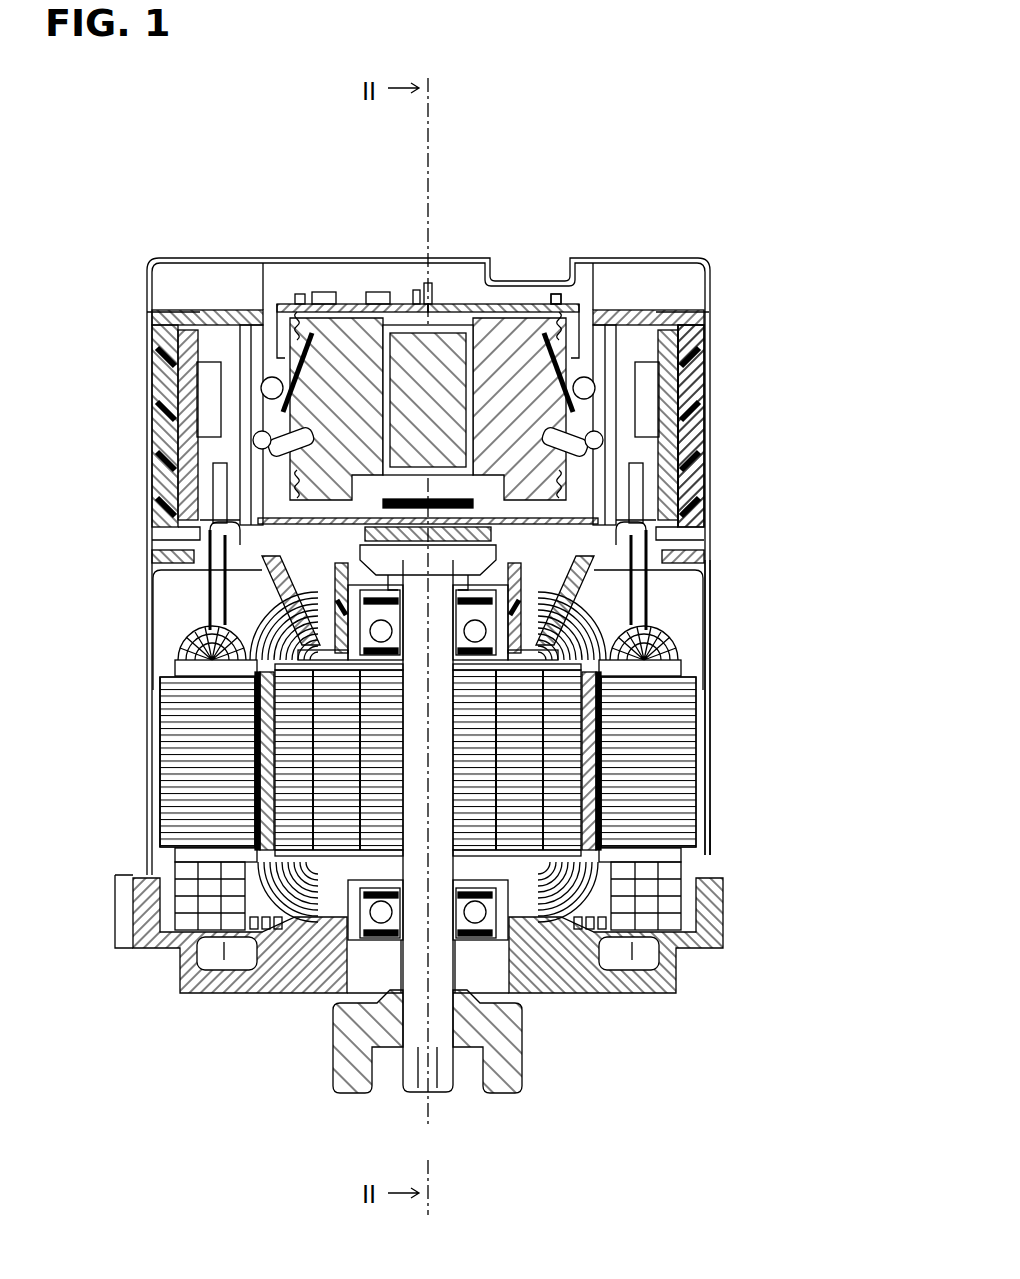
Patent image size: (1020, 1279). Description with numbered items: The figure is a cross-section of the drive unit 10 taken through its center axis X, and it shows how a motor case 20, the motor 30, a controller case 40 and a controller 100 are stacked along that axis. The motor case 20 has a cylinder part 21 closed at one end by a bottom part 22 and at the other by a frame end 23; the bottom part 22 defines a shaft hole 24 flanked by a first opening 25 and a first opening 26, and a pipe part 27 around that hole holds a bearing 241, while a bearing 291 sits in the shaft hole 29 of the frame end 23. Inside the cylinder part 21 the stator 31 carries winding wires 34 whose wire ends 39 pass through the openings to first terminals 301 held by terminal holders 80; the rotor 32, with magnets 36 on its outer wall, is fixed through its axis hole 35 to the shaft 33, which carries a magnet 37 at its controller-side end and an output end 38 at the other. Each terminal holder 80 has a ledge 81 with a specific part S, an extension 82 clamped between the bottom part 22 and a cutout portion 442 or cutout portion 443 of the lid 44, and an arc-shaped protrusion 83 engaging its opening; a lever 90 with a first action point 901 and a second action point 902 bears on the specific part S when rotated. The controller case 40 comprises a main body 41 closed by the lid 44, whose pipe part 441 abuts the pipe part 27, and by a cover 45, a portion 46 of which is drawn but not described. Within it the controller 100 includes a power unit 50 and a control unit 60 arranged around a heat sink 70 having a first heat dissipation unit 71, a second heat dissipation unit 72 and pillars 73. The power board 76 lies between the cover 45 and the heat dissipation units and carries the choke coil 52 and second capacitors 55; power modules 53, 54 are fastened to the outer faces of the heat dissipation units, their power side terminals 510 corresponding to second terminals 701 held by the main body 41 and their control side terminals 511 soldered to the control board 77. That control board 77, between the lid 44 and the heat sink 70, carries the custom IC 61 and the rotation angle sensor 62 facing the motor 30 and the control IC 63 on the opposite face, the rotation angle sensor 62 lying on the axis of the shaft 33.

The drive unit 10 is at (766, 213).
The controller 100 is at (422, 276).
The motor case 20 is at (712, 793).
The cylinder part 21 is at (712, 818).
The bottom part 22 is at (575, 555).
The frame end 23 is at (593, 997).
The shaft hole 24 is at (448, 590).
The first opening 25 is at (152, 580).
The first opening 26 is at (708, 590).
The pipe part 27 is at (515, 605).
The shaft hole 29 is at (462, 925).
The bearing 291 is at (500, 925).
The motor 30 is at (142, 705).
The stator 31 is at (162, 728).
The rotor 32 is at (162, 748).
The shaft 33 is at (420, 955).
The winding wires 34 is at (170, 650).
The axis hole 35 is at (162, 800).
The magnets 36 is at (162, 775).
The magnet 37 is at (420, 635).
The output end 38 is at (333, 1070).
The wire ends 39 is at (150, 463).
The controller case 40 is at (708, 358).
The main body 41 is at (708, 384).
The lid 44 is at (705, 650).
The pipe part 441 is at (322, 612).
The cutout portion 442 is at (152, 560).
The cutout portion 443 is at (708, 565).
The cover 45 is at (697, 257).
The cover lip 46 is at (150, 330).
The power unit 50 is at (355, 276).
The choke coil 52 is at (390, 307).
The power module 53 is at (150, 405).
The power module 54 is at (708, 428).
The second capacitors 55 is at (452, 330).
The control unit 60 is at (160, 630).
The custom IC 61 is at (395, 552).
The rotation angle sensor 62 is at (433, 580).
The control IC 63 is at (352, 497).
The heat sink 70 is at (497, 307).
The second terminal 701 is at (243, 307).
The first heat dissipation unit 71 is at (332, 300).
The second heat dissipation unit 72 is at (528, 307).
The pillar 73 is at (557, 300).
The power board 76 is at (470, 307).
The control board 77 is at (497, 307).
The terminal holder 80 is at (150, 380).
The ledge 81 is at (150, 543).
The extension 82 is at (155, 615).
The arc-shaped protrusion 83 is at (152, 605).
The lever 90 is at (150, 355).
The first action point 901 is at (177, 307).
The second action point 902 is at (150, 508).
The first terminal 301 is at (150, 420).
The power side terminals 510 is at (277, 293).
The control side terminals 511 is at (150, 443).
The bearing 241 is at (700, 700).
The specific part S is at (155, 523).
The center axis X is at (433, 1104).